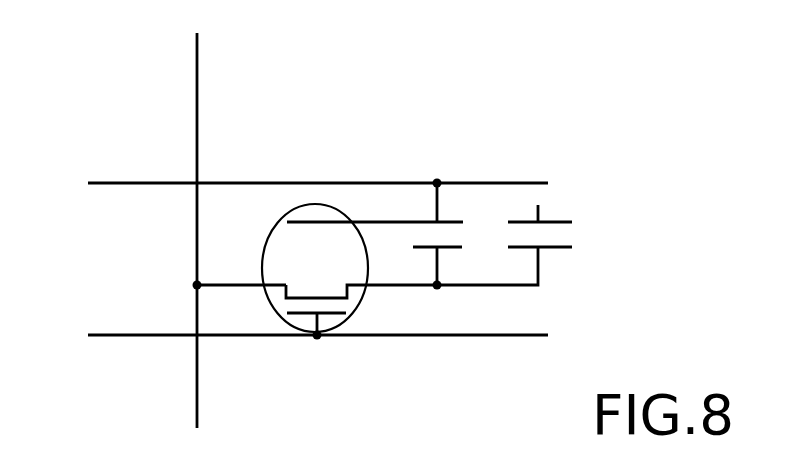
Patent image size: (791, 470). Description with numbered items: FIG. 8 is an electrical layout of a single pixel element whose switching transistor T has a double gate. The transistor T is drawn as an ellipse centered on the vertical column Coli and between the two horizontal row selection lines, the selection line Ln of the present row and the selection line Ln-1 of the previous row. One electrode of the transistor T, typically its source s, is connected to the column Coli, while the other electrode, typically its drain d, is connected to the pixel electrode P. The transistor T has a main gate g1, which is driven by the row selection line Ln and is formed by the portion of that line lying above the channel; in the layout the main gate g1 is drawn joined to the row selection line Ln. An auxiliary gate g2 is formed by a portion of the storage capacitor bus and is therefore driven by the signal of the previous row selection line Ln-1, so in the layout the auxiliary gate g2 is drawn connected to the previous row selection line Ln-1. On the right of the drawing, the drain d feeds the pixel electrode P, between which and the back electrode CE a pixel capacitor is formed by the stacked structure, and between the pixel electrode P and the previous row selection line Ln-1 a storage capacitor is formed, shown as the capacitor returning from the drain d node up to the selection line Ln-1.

The column Coli is at (197, 100).
The selection line of the previous row Ln-1 is at (283, 182).
The row selection line Ln is at (292, 334).
The transistor T is at (362, 300).
The source s is at (241, 271).
The drain d is at (412, 272).
The main gate g1 is at (303, 318).
The auxiliary gate g2 is at (302, 218).
The back electrode CE is at (493, 234).
The pixel electrode P is at (545, 250).